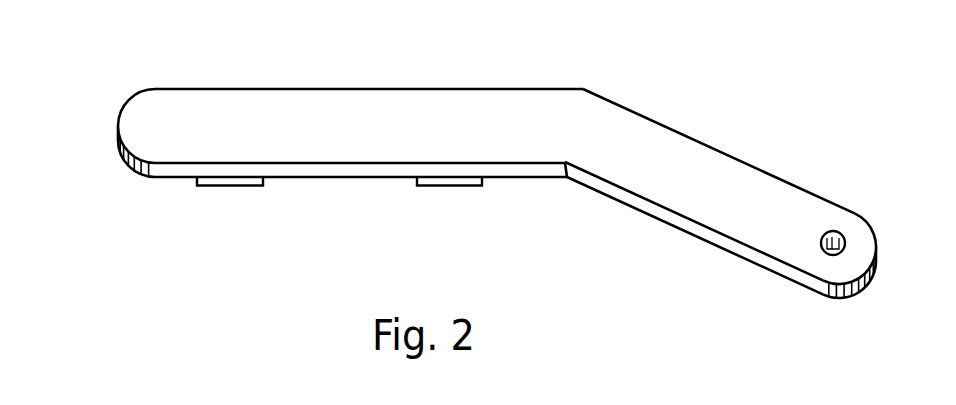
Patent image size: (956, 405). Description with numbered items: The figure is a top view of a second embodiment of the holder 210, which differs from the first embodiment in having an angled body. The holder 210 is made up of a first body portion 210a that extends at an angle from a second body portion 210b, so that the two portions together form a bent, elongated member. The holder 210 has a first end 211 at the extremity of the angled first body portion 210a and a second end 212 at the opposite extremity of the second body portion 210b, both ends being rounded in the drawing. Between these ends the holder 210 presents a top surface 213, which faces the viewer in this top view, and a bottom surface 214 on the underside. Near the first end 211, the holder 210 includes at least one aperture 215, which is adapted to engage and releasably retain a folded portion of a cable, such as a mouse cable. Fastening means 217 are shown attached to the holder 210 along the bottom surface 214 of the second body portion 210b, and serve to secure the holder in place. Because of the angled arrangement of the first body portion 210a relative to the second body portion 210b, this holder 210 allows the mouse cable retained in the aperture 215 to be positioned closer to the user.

The holder 210 is at (494, 78).
The first body portion 210a is at (698, 180).
The second body portion 210b is at (309, 120).
The first end 211 is at (857, 292).
The second end 212 is at (122, 148).
The top surface 213 is at (172, 120).
The bottom surface 214 is at (330, 178).
The aperture 215 is at (828, 233).
The fastening means 217 is at (230, 186).